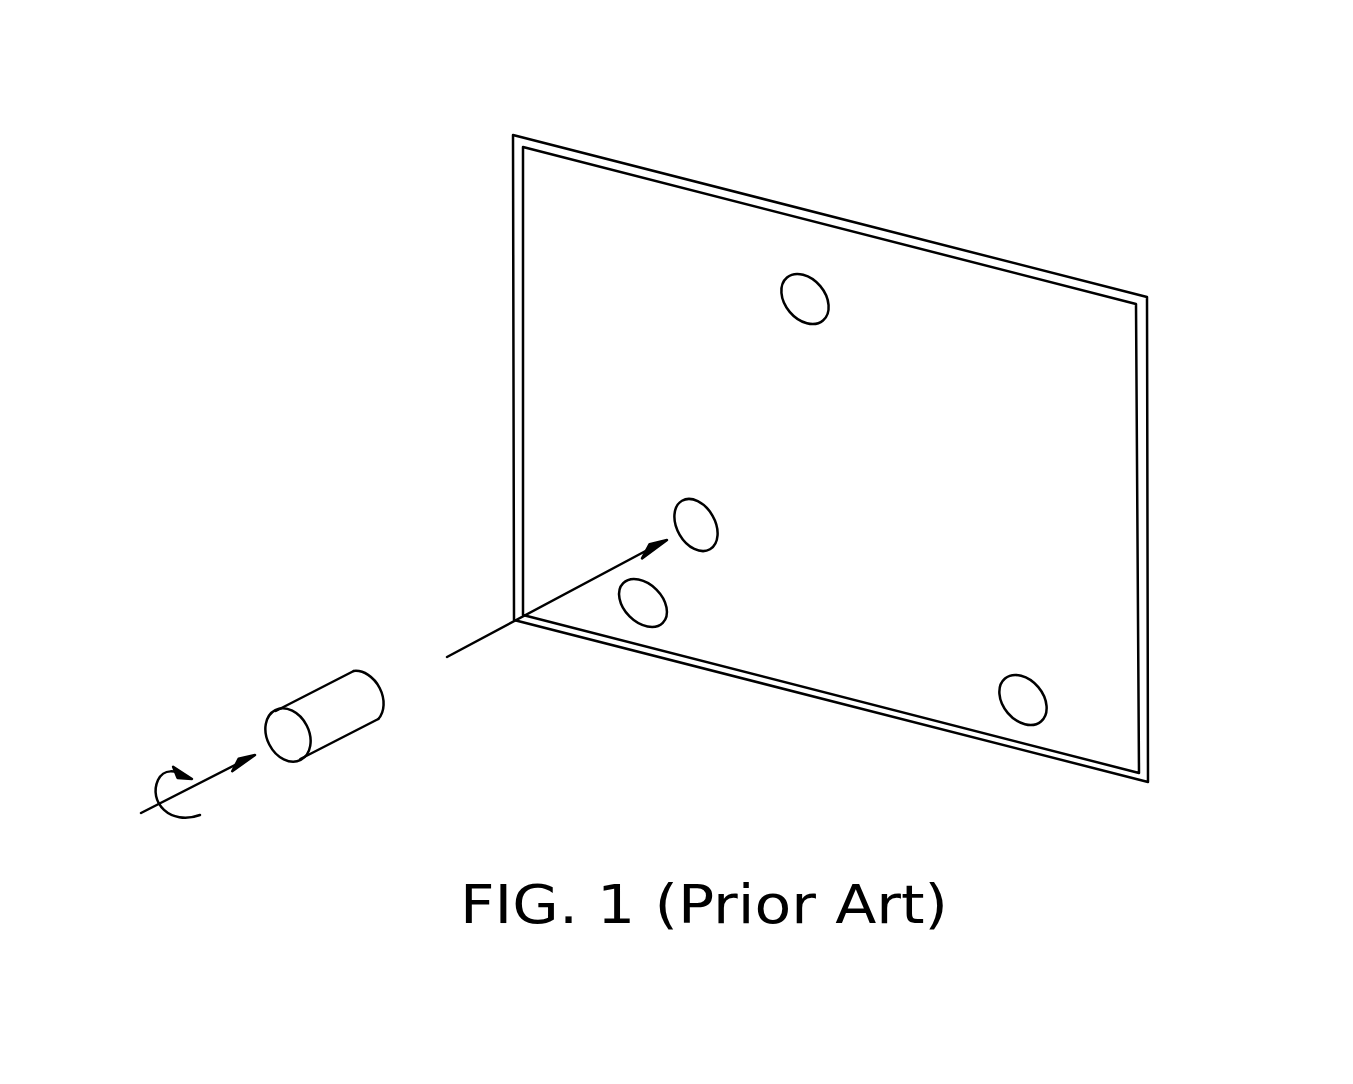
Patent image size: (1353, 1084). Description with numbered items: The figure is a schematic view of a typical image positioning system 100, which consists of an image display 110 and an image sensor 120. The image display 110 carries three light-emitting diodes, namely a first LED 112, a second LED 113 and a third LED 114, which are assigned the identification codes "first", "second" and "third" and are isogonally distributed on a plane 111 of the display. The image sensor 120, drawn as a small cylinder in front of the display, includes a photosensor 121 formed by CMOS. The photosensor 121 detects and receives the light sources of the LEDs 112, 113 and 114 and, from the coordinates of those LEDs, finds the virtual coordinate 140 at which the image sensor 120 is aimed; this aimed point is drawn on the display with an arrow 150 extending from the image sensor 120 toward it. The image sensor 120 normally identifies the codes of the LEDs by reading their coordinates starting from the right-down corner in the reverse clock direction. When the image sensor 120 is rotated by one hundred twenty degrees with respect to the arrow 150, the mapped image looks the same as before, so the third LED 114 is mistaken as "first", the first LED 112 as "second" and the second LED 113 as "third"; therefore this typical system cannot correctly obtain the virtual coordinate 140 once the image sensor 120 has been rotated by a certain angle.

The image positioning system 100 is at (330, 89).
The image display 110 is at (1140, 405).
The plane 111 is at (1137, 503).
The first LED 112 is at (1040, 688).
The second LED 113 is at (820, 283).
The third LED 114 is at (633, 617).
The image sensor 120 is at (249, 677).
The photosensor 121 is at (362, 695).
The virtual coordinate 140 is at (673, 505).
The arrow 150 is at (490, 637).